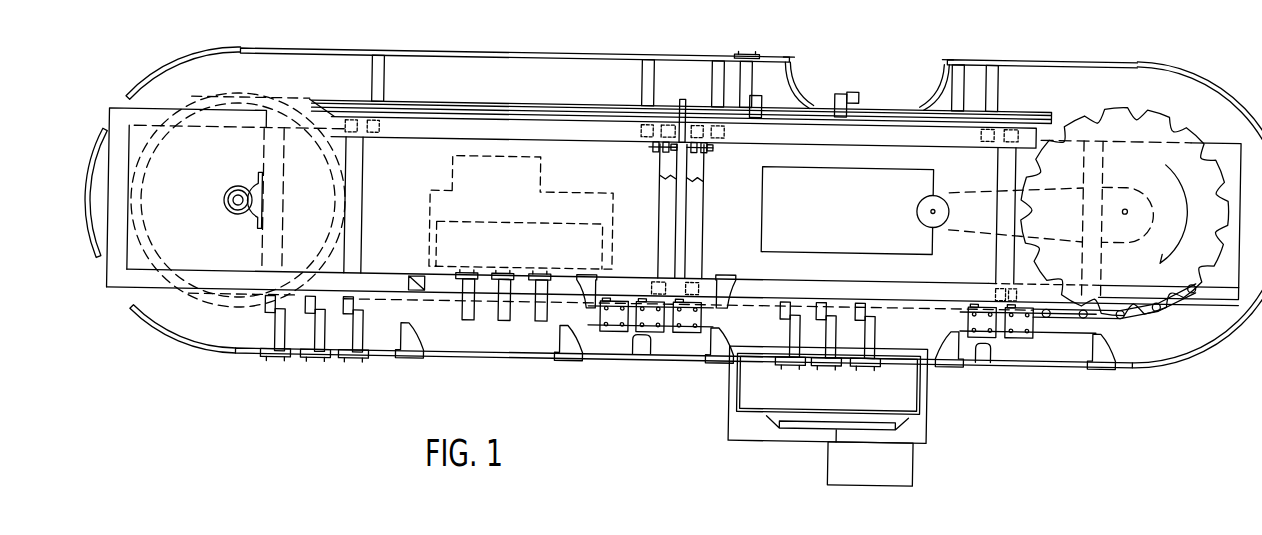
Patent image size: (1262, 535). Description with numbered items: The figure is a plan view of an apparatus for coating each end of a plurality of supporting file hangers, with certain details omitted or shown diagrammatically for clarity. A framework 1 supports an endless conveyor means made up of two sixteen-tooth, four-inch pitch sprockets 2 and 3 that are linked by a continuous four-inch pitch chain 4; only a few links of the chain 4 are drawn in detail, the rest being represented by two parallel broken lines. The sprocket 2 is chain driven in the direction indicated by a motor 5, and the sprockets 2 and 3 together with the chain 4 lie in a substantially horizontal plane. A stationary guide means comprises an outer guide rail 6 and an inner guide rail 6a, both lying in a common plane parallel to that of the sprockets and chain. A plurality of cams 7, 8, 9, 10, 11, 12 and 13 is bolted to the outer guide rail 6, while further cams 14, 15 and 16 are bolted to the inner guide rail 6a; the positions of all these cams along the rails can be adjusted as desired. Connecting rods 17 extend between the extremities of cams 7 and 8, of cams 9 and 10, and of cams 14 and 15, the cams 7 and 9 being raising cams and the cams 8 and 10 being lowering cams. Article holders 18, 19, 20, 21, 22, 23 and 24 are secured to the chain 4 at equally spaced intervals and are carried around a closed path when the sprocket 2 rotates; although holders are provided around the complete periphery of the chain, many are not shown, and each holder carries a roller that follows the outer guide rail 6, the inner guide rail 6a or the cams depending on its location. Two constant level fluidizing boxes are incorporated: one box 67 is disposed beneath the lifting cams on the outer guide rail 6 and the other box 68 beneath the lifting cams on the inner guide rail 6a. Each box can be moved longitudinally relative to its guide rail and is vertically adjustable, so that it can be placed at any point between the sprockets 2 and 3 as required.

The frame 1 is at (157, 288).
The sprocket 2 is at (1133, 162).
The sprocket 3 is at (163, 160).
The chain 4 is at (1167, 292).
The motor 5 is at (788, 172).
The outer guide rail 6 is at (97, 262).
The inner guide rail 6a is at (420, 137).
The cam 7 is at (1103, 343).
The cam 8 is at (953, 350).
The cam 9 is at (720, 343).
The cam 10 is at (570, 345).
The cam 11 is at (413, 345).
The cam 12 is at (788, 72).
The cam 13 is at (926, 72).
The cam 14 is at (725, 270).
The cam 15 is at (592, 270).
The cam 16 is at (412, 299).
The connecting rods 17 is at (632, 295).
The article holder 18 is at (1018, 325).
The article holder 19 is at (832, 305).
The article holder 20 is at (657, 326).
The article holder 21 is at (473, 293).
The article holder 22 is at (277, 330).
The article holder 23 is at (740, 72).
The article holder 24 is at (827, 90).
The constant level fluidizing box 67 is at (930, 416).
The constant level fluidizing box 68 is at (553, 217).